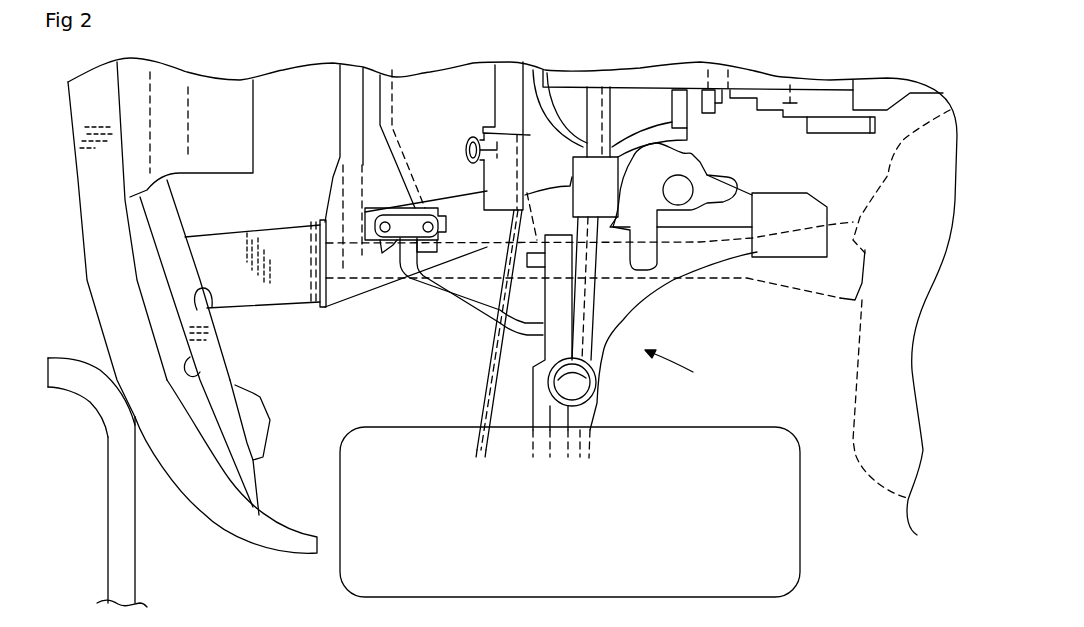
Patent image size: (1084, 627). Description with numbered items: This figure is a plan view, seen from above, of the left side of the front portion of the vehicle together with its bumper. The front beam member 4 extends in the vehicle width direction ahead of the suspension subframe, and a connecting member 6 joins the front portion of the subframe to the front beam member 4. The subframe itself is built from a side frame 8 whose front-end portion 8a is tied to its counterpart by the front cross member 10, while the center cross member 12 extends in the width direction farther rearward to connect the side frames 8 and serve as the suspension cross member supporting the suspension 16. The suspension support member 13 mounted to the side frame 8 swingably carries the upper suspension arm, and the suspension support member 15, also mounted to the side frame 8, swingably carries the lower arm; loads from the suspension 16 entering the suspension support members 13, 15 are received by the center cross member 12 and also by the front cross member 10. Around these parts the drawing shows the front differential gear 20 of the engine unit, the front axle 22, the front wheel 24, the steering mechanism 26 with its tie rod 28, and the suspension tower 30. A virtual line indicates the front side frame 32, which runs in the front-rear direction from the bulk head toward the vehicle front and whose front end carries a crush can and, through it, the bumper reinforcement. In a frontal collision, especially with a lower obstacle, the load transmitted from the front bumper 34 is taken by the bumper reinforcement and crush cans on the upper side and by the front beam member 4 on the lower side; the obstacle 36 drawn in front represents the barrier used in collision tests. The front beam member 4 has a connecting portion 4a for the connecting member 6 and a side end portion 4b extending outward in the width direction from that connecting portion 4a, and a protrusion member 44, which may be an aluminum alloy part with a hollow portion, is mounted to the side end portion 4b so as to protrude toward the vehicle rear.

The front beam member 4 is at (150, 220).
The connecting portion 4a is at (212, 307).
The side end portion 4b is at (198, 365).
The connecting member 6 is at (290, 300).
The side frame 8 is at (450, 198).
The front-end portion 8a is at (340, 304).
The front cross member 10 is at (340, 120).
The center cross member 12 is at (495, 118).
The suspension support member 13 is at (505, 258).
The suspension support member 15 is at (794, 210).
The suspension 16 is at (685, 364).
The front differential gear 20 is at (717, 112).
The front axle 22 is at (597, 300).
The front wheel 24 is at (698, 428).
The steering mechanism 26 is at (466, 146).
The tie rod 28 is at (482, 393).
The suspension tower 30 is at (700, 160).
The front side frame 32 is at (747, 282).
The front bumper 34 is at (72, 92).
The obstacle 36 is at (137, 571).
The protrusion member 44 is at (268, 400).